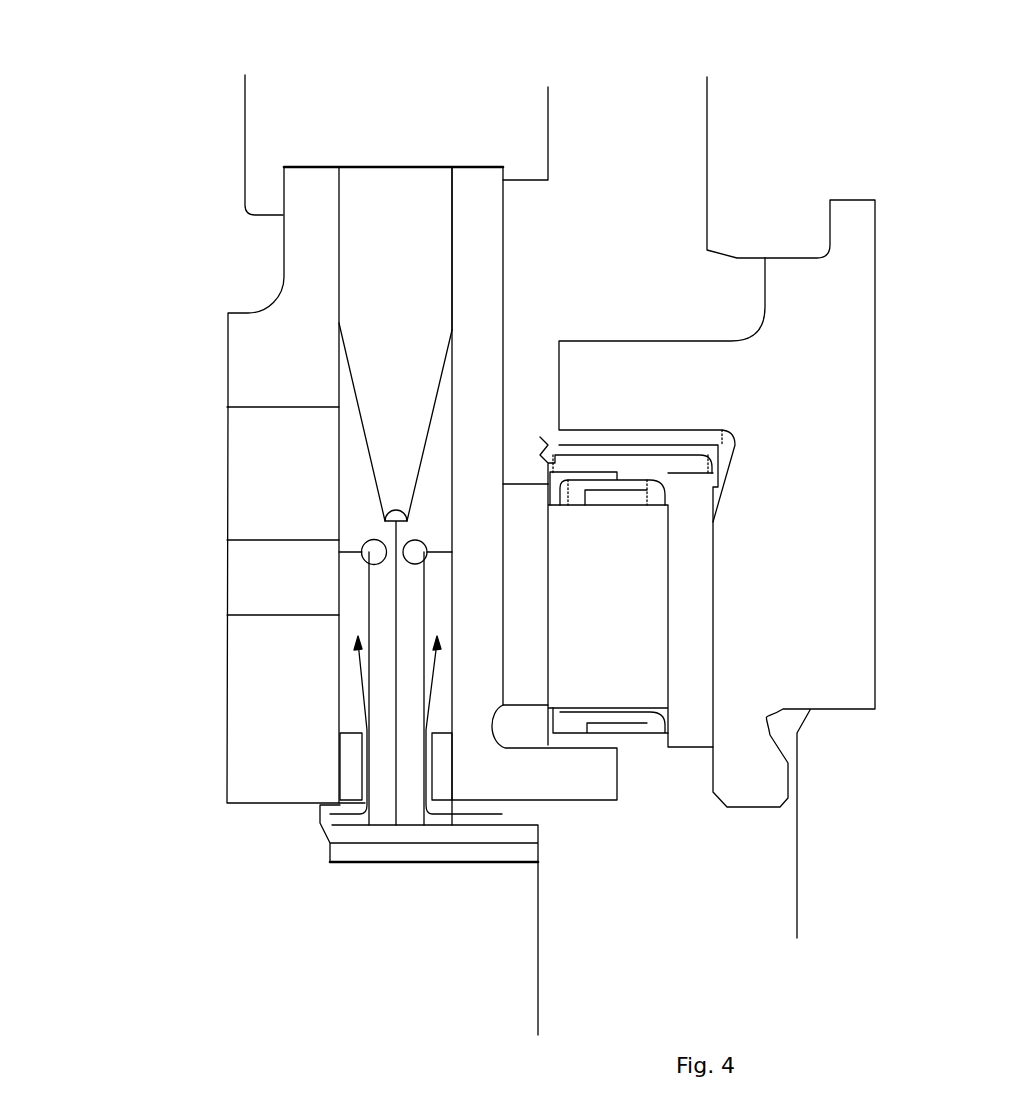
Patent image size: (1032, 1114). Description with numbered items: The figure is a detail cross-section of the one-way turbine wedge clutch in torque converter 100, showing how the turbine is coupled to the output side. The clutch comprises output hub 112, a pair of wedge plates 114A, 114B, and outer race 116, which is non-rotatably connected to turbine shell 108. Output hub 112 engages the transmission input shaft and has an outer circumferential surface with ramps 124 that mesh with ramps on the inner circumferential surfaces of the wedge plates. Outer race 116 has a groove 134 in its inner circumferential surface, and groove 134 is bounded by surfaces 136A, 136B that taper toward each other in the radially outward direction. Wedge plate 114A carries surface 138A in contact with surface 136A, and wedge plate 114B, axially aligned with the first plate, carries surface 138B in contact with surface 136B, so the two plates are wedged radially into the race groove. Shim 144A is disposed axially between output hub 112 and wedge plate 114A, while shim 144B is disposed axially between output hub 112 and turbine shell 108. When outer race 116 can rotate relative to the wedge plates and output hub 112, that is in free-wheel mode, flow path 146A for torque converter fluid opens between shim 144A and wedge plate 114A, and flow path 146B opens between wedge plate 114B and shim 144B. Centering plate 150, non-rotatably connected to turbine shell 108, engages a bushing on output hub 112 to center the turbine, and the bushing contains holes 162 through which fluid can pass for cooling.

The torque converter 100 is at (748, 102).
The turbine shell 108 is at (483, 256).
The output hub 112 is at (543, 963).
The wedge plate 114A is at (383, 808).
The wedge plate 114B is at (410, 812).
The outer race 116 is at (410, 166).
The ramps 124 is at (505, 835).
The groove 134 is at (397, 508).
The surface 136A is at (338, 323).
The surface 136B is at (453, 345).
The surface 138A is at (365, 567).
The surface 138B is at (450, 567).
The shim 144A is at (350, 763).
The shim 144B is at (440, 760).
The flow path 146A is at (362, 683).
The flow path 146B is at (432, 683).
The centering plate 150 is at (293, 340).
The holes 162 is at (265, 573).